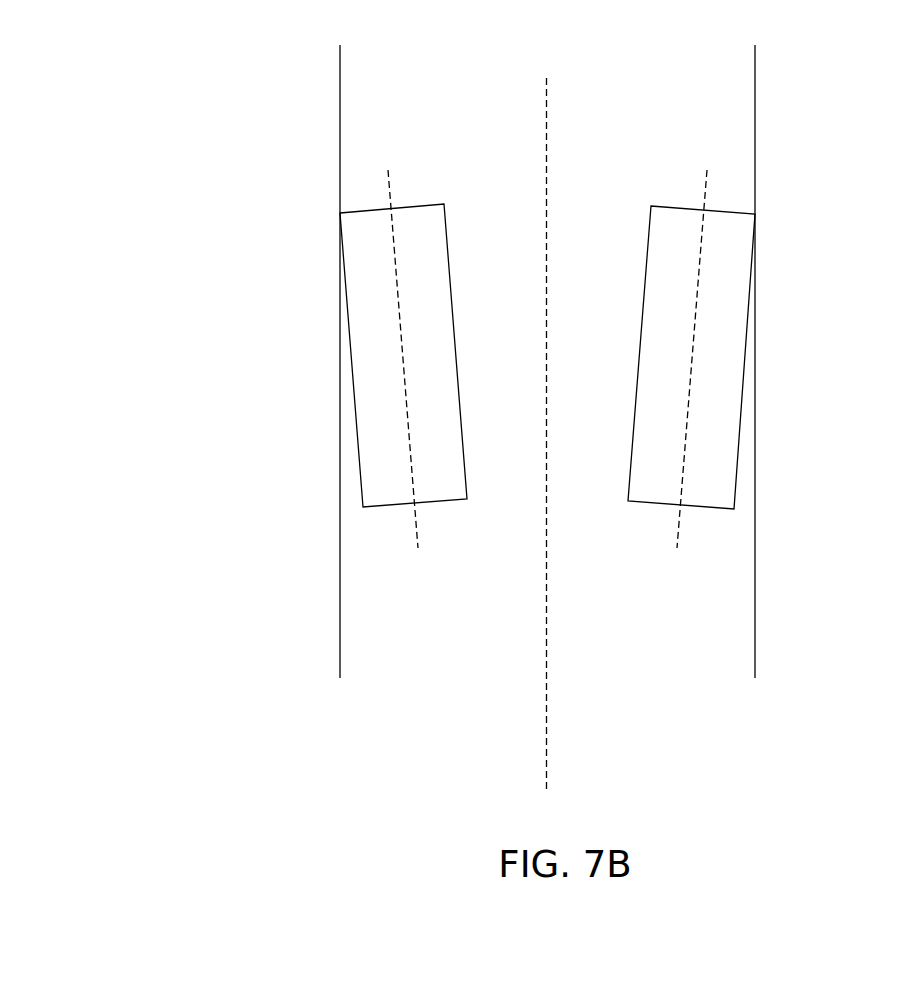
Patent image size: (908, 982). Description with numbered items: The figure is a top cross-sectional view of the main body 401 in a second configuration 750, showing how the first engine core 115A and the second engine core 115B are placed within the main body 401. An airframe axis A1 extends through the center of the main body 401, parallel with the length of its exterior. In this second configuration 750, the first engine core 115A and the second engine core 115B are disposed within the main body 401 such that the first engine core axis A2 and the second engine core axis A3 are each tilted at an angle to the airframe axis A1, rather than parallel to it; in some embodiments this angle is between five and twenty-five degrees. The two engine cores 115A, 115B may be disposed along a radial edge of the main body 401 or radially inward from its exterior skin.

The second configuration 750 is at (185, 128).
The main body 401 is at (340, 638).
The second engine core 115B is at (362, 378).
The first engine core 115A is at (731, 378).
The airframe axis A1 is at (547, 423).
The first engine core axis A2 is at (696, 347).
The second engine core axis A3 is at (398, 347).